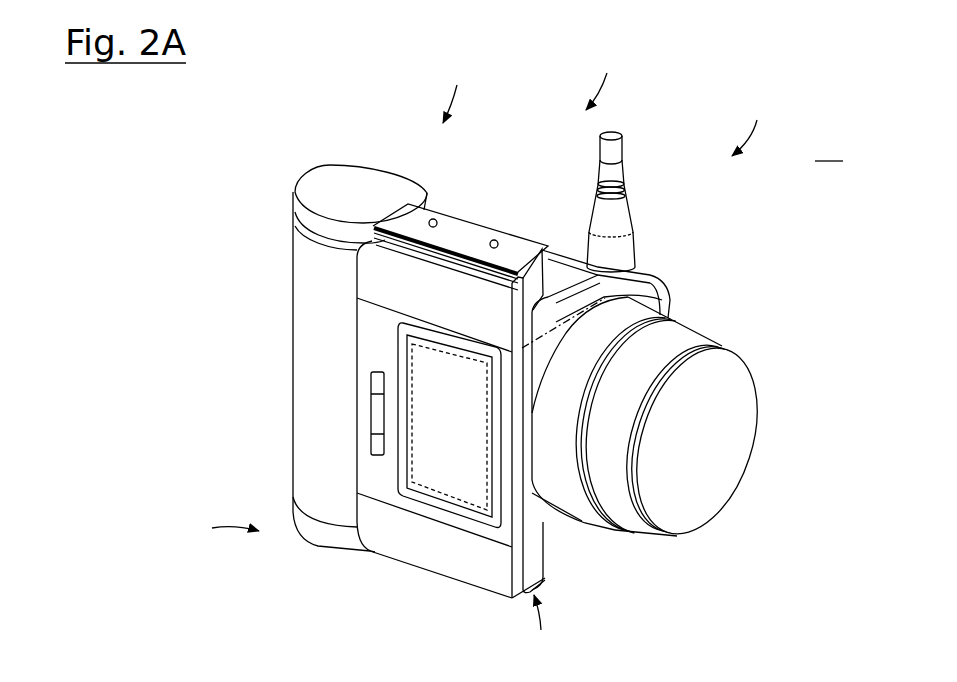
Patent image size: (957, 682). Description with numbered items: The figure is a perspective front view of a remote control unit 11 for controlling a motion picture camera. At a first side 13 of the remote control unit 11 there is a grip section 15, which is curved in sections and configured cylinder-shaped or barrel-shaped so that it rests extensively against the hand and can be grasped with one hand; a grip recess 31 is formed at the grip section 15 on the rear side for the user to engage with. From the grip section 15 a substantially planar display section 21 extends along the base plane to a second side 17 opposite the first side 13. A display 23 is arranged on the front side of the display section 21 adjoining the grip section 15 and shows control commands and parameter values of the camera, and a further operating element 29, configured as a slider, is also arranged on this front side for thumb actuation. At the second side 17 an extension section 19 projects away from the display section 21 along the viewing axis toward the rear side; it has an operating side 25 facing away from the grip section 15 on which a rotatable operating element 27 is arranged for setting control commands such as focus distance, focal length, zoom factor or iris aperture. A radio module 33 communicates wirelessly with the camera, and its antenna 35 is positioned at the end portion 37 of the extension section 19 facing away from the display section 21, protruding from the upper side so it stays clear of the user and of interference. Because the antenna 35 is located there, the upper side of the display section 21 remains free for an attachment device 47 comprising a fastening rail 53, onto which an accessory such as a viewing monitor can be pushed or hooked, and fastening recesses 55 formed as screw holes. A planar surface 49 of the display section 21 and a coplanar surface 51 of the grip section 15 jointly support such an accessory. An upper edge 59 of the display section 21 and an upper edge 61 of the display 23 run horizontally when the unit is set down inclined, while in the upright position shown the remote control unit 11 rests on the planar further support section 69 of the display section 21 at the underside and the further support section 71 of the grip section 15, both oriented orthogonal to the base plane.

The remote control unit 11 is at (243, 185).
The first side 13 is at (264, 310).
The grip section 15 is at (312, 263).
The second side 17 is at (716, 310).
The extension section 19 is at (650, 292).
The display section 21 is at (463, 563).
The display 23 is at (435, 433).
The operating side 25 is at (543, 525).
The rotatable operating element 27 is at (738, 434).
The further operating element 29 is at (378, 418).
The grip recess 31 is at (431, 200).
The radio module 33 is at (580, 221).
The antenna 35 is at (618, 174).
The end portion 37 is at (642, 268).
The attachment device 47 is at (463, 251).
The planar surface 49 is at (518, 253).
The surface 51 is at (350, 183).
The fastening rail 53 is at (380, 226).
The fastening recess 55 is at (438, 221).
The upper edge 59 is at (378, 243).
The upper edge 61 is at (412, 338).
The further support section 69 is at (410, 565).
The further support section 71 is at (320, 545).